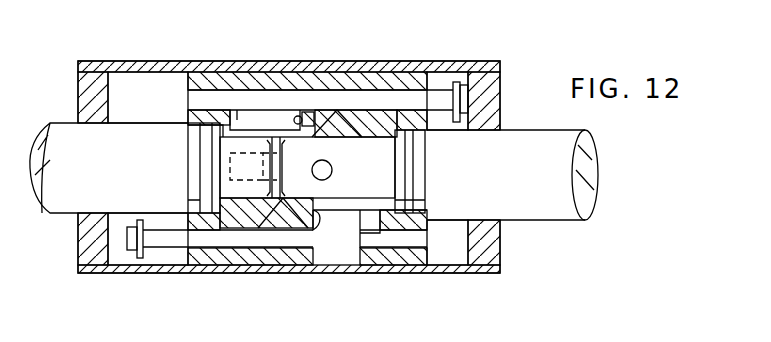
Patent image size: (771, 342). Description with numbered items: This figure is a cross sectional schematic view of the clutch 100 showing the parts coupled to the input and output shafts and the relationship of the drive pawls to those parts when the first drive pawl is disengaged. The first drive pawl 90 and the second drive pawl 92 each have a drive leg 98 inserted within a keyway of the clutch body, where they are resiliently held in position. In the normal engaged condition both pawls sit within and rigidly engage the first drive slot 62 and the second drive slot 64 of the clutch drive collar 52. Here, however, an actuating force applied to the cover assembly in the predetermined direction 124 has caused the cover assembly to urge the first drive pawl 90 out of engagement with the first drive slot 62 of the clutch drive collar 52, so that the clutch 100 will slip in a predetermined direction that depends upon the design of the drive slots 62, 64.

The clutch 100 is at (98, 29).
The drive legs 98 is at (250, 110).
The first drive slot 62 is at (296, 116).
The first drive pawl 90 is at (347, 100).
The clutch drive collar 52 is at (332, 132).
The second drive pawl 92 is at (220, 238).
The second drive slot 64 is at (316, 224).
The predetermined direction 124 is at (512, 243).